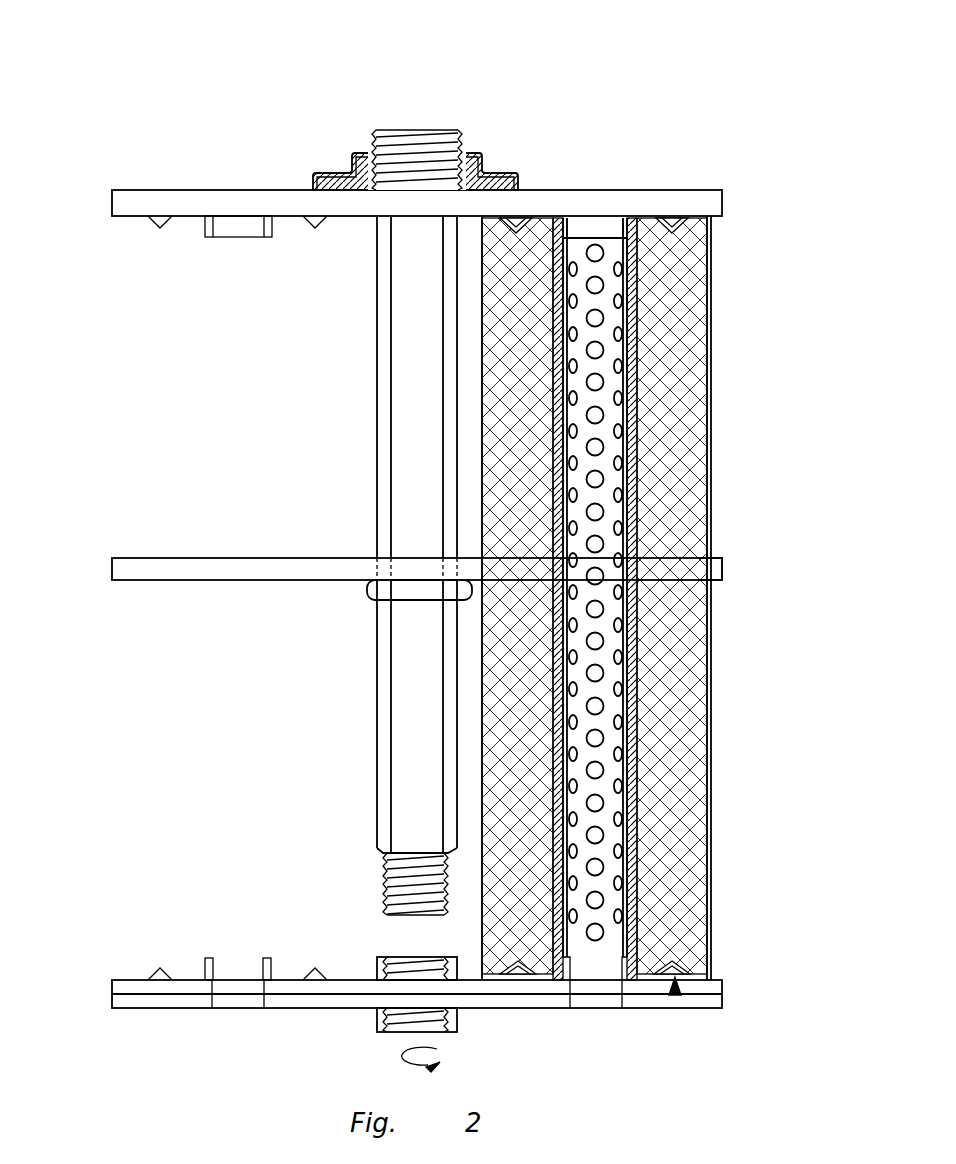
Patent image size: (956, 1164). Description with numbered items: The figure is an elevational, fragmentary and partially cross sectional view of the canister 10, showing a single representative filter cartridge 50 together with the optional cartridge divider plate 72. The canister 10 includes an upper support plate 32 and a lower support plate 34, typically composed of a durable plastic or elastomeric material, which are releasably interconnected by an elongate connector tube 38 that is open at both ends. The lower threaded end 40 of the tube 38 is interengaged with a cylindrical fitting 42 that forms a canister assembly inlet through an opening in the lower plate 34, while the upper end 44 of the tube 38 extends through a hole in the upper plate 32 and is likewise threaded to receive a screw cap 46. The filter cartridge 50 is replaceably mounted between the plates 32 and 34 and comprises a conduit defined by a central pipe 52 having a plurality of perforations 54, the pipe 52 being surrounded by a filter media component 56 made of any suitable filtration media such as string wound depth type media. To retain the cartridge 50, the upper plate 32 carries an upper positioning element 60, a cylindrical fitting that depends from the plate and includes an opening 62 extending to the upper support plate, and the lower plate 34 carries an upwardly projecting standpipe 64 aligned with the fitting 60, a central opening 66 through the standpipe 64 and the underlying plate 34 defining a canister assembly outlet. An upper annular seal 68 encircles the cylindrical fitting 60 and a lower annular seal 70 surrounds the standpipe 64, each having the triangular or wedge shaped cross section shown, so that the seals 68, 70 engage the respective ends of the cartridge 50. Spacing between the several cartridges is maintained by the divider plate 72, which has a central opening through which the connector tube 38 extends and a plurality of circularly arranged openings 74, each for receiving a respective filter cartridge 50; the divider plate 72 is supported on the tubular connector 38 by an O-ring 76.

The canister 10 is at (658, 77).
The upper support plate 32 is at (280, 190).
The lower support plate 34 is at (130, 980).
The connector tube 38 is at (377, 340).
The lower threaded end 40 is at (383, 880).
The cylindrical fitting 42 is at (377, 965).
The upper end 44 is at (462, 133).
The screw cap 46 is at (352, 160).
The filter cartridge 50 is at (710, 352).
The central pipe 52 is at (633, 625).
The perforations 54 is at (603, 690).
The filter media component 56 is at (668, 795).
The upper positioning element 60 is at (575, 227).
The opening 62 is at (605, 228).
The standpipe 64 is at (205, 965).
The central opening 66 is at (236, 965).
The upper annular seal 68 is at (520, 222).
The lower annular seal 70 is at (675, 995).
The divider plate 72 is at (165, 582).
The openings 74 is at (725, 570).
The O-ring 76 is at (372, 586).